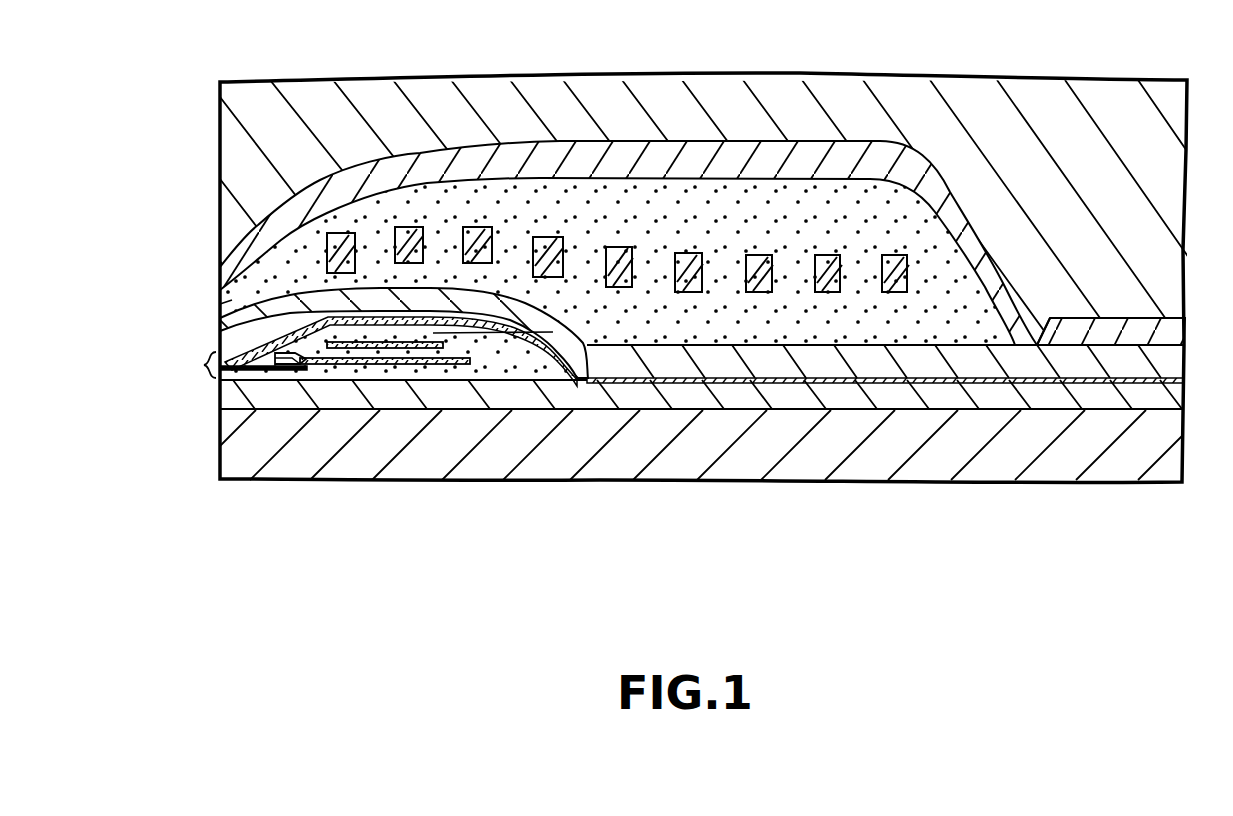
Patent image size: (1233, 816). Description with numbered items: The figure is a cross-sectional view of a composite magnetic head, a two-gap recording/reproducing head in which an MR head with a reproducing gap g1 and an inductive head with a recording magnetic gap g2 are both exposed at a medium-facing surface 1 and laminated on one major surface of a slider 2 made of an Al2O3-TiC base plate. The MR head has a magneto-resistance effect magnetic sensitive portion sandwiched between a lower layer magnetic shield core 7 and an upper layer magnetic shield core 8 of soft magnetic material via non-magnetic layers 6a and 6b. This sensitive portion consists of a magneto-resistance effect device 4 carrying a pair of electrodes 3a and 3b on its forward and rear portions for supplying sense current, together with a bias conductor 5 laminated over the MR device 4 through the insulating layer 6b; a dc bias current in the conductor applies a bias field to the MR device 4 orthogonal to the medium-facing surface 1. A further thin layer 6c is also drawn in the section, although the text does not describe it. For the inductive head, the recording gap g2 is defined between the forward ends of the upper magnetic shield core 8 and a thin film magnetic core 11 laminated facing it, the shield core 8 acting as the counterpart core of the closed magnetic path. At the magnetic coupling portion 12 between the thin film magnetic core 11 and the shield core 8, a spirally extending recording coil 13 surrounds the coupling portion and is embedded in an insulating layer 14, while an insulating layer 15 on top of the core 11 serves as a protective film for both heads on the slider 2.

The medium-facing surface 1 is at (218, 393).
The slider 2 is at (1055, 470).
The forward electrode 3a is at (240, 372).
The rear electrode 3b is at (445, 348).
The magneto-resistance effect device 4 is at (280, 364).
The bias conductor 5 is at (465, 366).
The non-magnetic layer 6a is at (376, 372).
The non-magnetic insulating layer 6b is at (400, 352).
The insulating layer 6c is at (550, 335).
The lower layer magnetic shield core 7 is at (745, 398).
The upper layer magnetic shield core 8 is at (830, 365).
The thin film magnetic core 11 is at (913, 160).
The magnetic coupling portion 12 is at (1130, 343).
The recording coil 13 is at (827, 255).
The insulating layer 14 is at (967, 268).
The insulating layer (protective film) 15 is at (1113, 88).
The reproducing gap g1 is at (204, 365).
The recording magnetic gap g2 is at (219, 321).